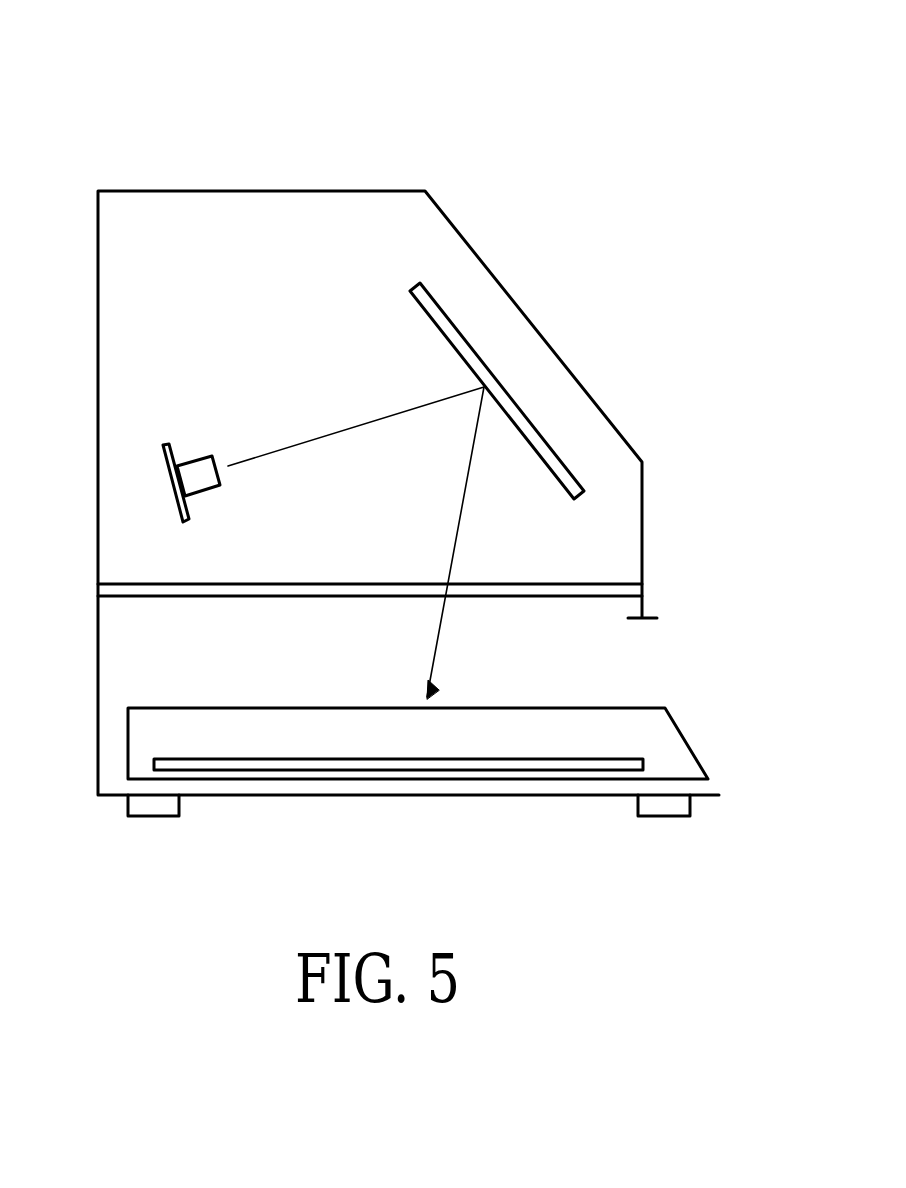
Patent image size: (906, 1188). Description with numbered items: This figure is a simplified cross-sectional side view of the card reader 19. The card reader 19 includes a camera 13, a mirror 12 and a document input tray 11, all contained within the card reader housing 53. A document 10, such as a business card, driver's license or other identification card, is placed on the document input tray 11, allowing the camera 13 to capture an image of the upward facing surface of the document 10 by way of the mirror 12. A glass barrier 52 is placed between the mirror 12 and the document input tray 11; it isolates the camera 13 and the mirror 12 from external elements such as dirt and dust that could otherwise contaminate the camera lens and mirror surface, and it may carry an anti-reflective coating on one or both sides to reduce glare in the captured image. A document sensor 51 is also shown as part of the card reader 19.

The card reader 19 is at (583, 84).
The card reader housing 53 is at (268, 191).
The glass barrier 52 is at (593, 597).
The mirror 12 is at (448, 315).
The camera 13 is at (163, 459).
The document input tray 11 is at (685, 735).
The document 10 is at (265, 770).
The document sensor 51 is at (149, 820).